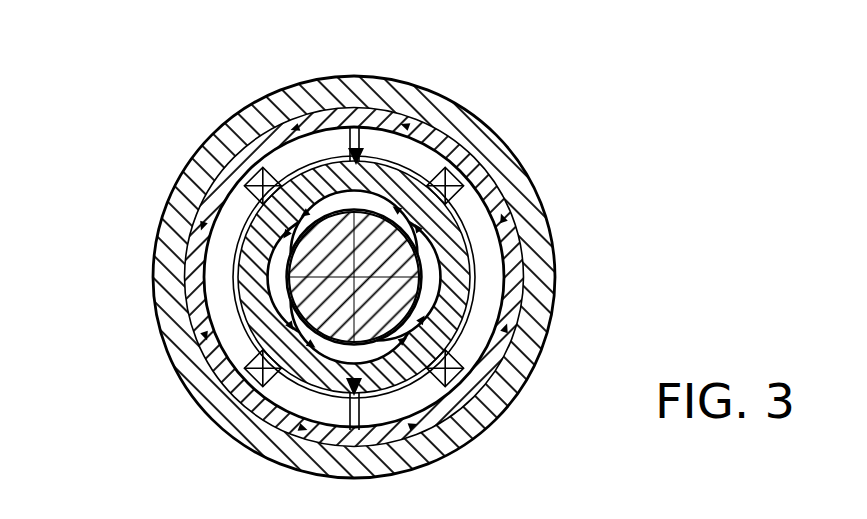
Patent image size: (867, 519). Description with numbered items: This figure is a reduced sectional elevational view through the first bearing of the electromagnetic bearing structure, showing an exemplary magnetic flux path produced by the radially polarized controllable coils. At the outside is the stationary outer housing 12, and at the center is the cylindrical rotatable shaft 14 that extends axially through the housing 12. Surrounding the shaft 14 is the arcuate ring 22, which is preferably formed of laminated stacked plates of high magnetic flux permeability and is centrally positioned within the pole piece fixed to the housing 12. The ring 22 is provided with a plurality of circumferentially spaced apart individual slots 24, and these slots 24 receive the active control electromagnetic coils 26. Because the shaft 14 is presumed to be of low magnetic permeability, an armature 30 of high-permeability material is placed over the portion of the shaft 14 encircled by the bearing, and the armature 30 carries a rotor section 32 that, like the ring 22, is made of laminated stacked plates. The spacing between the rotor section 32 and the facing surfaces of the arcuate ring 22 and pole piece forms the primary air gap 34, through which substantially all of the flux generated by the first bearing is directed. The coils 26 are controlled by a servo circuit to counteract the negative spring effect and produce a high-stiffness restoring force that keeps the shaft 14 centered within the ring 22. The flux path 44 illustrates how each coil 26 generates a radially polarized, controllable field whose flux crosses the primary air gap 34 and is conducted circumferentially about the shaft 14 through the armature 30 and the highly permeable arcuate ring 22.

The stationary outer housing 12 is at (514, 160).
The cylindrical rotatable shaft 14 is at (305, 270).
The arcuate ring 22 is at (520, 272).
The slots 24 is at (284, 172).
The active control electromagnetic coils 26 is at (262, 183).
The armature 30 is at (440, 330).
The rotor section 32 is at (470, 300).
The primary air gap 34 is at (470, 222).
The magnetic flux path 44 is at (360, 126).